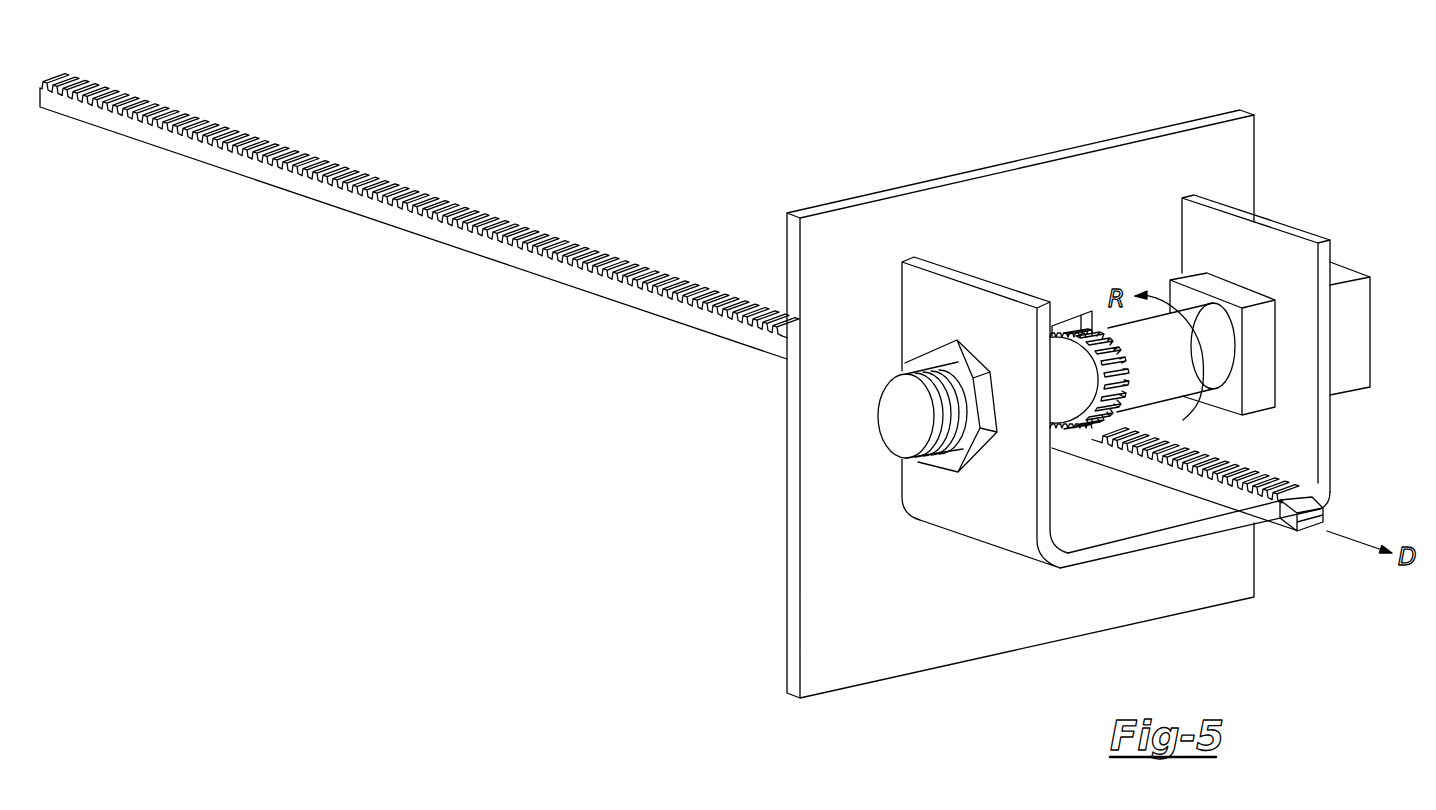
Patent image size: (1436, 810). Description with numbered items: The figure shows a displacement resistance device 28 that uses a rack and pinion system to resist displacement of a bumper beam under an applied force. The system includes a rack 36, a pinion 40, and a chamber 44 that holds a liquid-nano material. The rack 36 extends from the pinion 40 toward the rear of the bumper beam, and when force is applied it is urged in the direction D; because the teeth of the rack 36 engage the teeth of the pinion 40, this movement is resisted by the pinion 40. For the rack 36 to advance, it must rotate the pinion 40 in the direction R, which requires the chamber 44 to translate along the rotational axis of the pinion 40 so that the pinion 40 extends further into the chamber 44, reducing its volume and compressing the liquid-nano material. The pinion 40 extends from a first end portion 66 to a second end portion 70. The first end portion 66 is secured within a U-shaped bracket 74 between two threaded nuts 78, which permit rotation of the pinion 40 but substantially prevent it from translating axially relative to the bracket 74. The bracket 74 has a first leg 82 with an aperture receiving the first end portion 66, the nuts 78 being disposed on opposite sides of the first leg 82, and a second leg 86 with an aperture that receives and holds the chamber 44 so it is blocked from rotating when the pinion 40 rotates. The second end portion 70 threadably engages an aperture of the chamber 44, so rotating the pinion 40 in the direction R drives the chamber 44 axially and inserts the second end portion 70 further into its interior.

The displacement resistance device 28 is at (1091, 404).
The rack 36 is at (716, 336).
The pinion 40 is at (1062, 390).
The chamber 44 is at (1355, 309).
The first end portion 66 is at (905, 416).
The second end portion 70 is at (1222, 311).
The bracket 74 is at (1172, 535).
The threaded nuts 78 is at (826, 203).
The first leg 82 is at (1025, 465).
The second leg 86 is at (1330, 360).